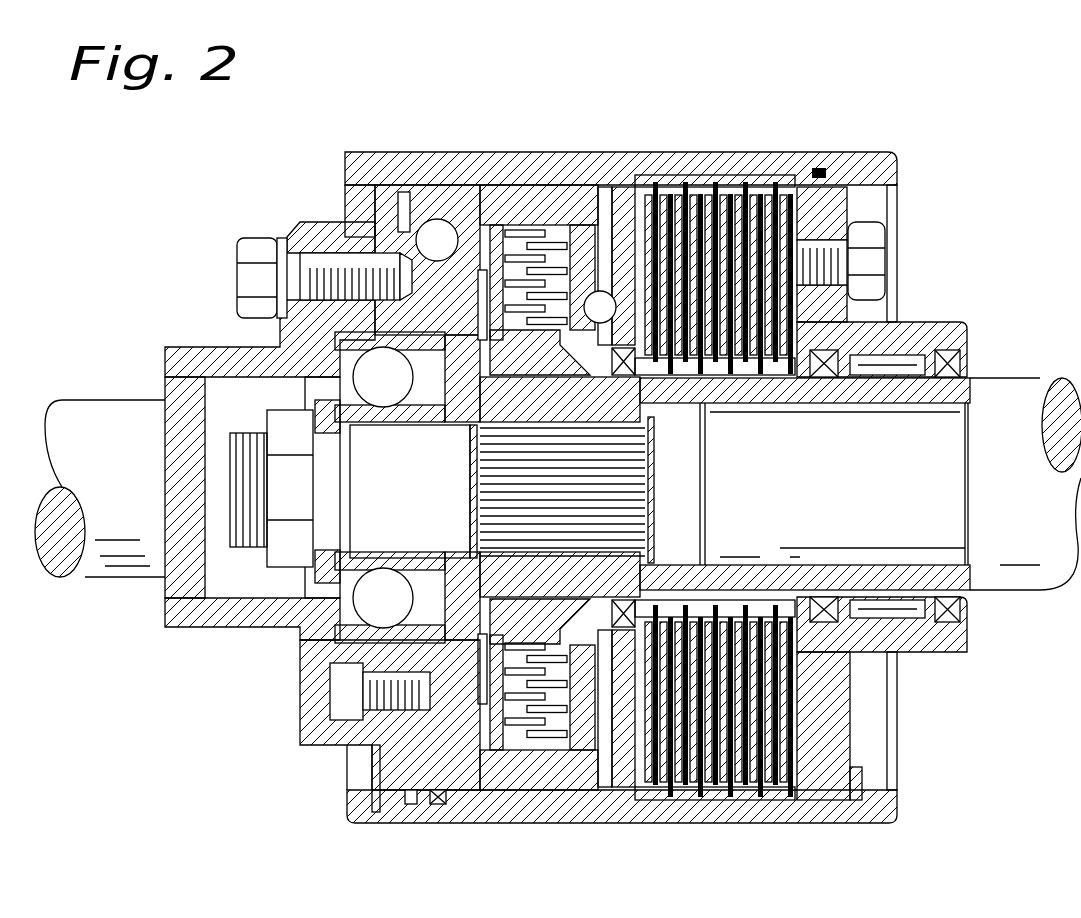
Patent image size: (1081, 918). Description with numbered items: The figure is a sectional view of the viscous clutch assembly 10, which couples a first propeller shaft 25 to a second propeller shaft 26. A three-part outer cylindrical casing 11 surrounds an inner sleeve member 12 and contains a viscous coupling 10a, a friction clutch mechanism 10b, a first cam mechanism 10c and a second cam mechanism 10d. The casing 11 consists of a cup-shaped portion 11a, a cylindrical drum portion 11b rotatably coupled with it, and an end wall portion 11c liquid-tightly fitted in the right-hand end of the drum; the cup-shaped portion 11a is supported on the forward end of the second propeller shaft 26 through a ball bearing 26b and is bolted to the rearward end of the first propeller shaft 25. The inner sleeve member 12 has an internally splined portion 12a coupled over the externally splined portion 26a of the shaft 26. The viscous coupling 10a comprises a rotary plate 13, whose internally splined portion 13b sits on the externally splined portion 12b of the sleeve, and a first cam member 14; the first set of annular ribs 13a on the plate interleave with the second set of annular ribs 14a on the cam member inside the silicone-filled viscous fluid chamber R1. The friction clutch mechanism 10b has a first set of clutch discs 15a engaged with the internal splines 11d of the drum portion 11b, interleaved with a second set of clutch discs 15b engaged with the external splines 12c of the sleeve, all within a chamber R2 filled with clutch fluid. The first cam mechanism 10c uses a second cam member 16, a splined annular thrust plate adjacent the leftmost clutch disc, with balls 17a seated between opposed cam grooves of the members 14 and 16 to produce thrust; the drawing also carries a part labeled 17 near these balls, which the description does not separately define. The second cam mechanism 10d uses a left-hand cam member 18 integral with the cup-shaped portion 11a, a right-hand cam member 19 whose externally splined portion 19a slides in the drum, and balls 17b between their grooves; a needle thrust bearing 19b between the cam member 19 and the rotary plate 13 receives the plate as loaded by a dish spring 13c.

The viscous clutch assembly 10 is at (840, 112).
The viscous coupling 10a is at (527, 775).
The friction clutch mechanism 10b is at (680, 815).
The first cam mechanism 10c is at (612, 178).
The second cam mechanism 10d is at (403, 165).
The outer cylindrical casing 11 is at (876, 152).
The cup-shaped portion 11a is at (328, 240).
The cylindrical drum portion 11b is at (742, 165).
The end wall portion 11c is at (905, 653).
The internal splines 11d is at (784, 168).
The inner sleeve member 12 is at (868, 560).
The internally splined portion 12a is at (448, 560).
The externally splined portion 12b is at (478, 476).
The external splines 12c is at (718, 395).
The rotary plate 13 is at (493, 225).
The first set of annular ribs 13a is at (505, 760).
The internally splined portion 13b is at (480, 425).
The dish spring 13c is at (548, 405).
The first cam member 14 is at (545, 205).
The second set of annular ribs 14a is at (560, 768).
The first set of clutch discs 15a is at (675, 195).
The second set of clutch discs 15b is at (770, 392).
The second cam member 16 is at (633, 182).
The retaining ring 17 is at (650, 380).
The balls 17a is at (600, 325).
The balls 17b is at (437, 226).
The left-hand cam member 18 is at (372, 762).
The right-hand cam member 19 is at (440, 805).
The externally splined portion 19a is at (412, 805).
The needle thrust bearing 19b is at (482, 700).
The first propeller shaft 25 is at (100, 415).
The second propeller shaft 26 is at (1010, 385).
The externally splined portion 26a is at (641, 492).
The ball bearing 26b is at (350, 585).
The viscous fluid chamber R1 is at (510, 198).
The chamber R2 is at (730, 612).